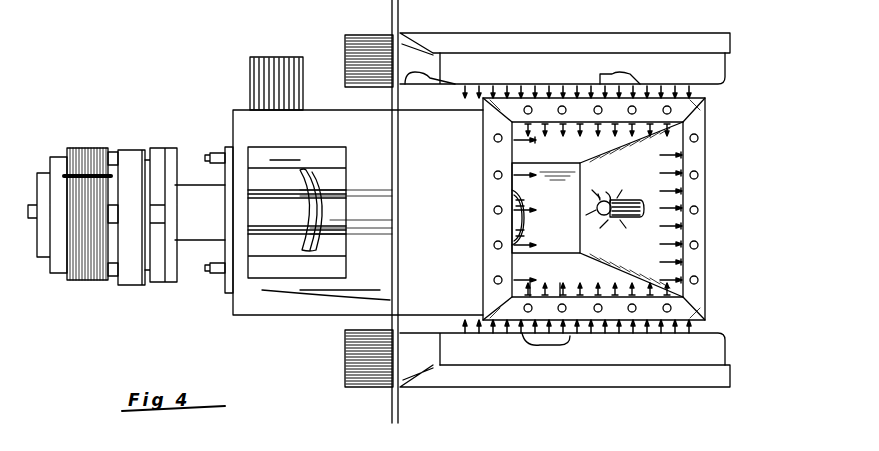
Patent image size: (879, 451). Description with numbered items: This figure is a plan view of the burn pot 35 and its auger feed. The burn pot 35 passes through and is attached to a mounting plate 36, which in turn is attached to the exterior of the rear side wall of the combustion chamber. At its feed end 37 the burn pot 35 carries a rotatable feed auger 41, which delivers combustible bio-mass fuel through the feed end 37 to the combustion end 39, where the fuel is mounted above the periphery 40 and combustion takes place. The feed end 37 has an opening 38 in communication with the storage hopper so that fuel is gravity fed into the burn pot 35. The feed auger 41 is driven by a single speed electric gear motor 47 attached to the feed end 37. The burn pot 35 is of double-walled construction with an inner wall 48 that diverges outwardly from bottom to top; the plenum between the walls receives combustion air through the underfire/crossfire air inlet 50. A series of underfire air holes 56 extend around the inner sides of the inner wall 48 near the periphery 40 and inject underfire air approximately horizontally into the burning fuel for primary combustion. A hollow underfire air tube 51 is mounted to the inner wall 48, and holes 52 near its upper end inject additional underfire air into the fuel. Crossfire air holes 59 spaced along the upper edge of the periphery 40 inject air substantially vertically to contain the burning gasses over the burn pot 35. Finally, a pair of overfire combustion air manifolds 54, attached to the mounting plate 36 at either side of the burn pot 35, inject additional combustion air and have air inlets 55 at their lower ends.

The burn pot 35 is at (627, 209).
The mounting plate 36 is at (400, 406).
The feed end 37 is at (329, 212).
The opening 38 is at (268, 158).
The combustion end 39 is at (548, 208).
The periphery 40 is at (683, 262).
The feed auger 41 is at (290, 214).
The single speed electric gear motor 47 is at (125, 150).
The inner wall 48 is at (648, 233).
The underfire/crossfire air inlet 50 is at (250, 74).
The underfire air tube 51 is at (630, 198).
The holes 52 is at (598, 202).
The overfire combustion air manifolds 54 is at (730, 43).
The air inlets 55 is at (345, 52).
The underfire air holes 56 is at (563, 292).
The crossfire air holes 59 is at (671, 112).